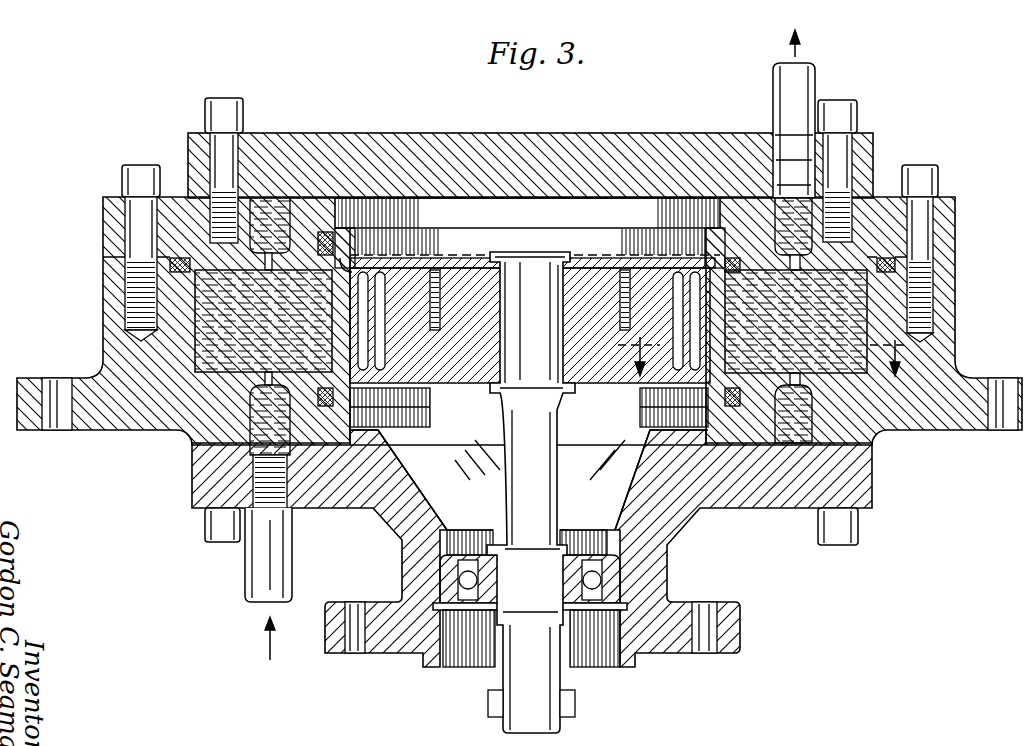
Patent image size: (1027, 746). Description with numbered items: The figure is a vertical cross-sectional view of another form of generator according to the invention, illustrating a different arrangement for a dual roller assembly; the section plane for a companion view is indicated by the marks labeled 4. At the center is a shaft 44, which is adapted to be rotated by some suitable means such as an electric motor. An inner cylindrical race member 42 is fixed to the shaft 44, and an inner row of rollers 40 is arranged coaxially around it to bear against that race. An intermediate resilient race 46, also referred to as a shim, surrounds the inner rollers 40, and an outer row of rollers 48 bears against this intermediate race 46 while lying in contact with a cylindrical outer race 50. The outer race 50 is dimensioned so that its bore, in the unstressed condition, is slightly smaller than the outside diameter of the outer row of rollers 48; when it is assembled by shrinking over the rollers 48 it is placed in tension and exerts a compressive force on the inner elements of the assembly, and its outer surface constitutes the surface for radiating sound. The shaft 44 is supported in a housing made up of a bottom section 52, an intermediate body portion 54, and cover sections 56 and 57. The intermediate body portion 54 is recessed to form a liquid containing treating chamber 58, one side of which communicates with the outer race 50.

The section line 4- 4 is at (761, 345).
The inner row of rollers 40 is at (348, 360).
The inner cylindrical race member 42 is at (428, 373).
The shaft 44 is at (555, 473).
The intermediate resilient race 46 is at (378, 345).
The outer row of rollers 48 is at (360, 320).
The cylindrical outer race 50 is at (340, 288).
The bottom section 52 is at (762, 500).
The intermediate body portion 54 is at (947, 327).
The cover section 56 is at (885, 205).
The cover section 57 is at (640, 146).
The liquid containing treating chamber 58 is at (840, 357).